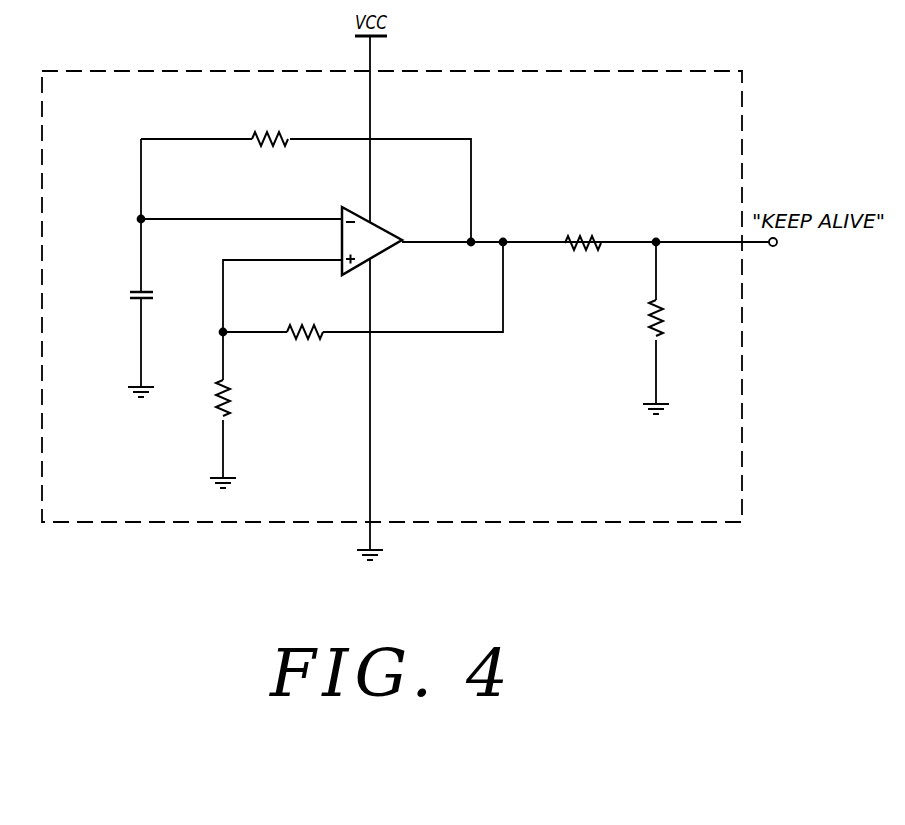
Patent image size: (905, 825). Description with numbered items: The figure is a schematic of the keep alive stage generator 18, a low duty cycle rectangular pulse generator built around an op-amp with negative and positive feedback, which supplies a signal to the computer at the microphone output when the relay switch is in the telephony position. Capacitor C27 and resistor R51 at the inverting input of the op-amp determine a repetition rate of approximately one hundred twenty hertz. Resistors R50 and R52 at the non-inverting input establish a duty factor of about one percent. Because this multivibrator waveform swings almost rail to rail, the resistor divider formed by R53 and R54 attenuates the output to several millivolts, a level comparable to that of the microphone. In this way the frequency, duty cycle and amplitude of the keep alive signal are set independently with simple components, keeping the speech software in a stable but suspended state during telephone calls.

The "keep alive" stage generator 18 is at (655, 522).
The resistor R50 is at (231, 398).
The resistor R51 is at (286, 137).
The resistor R52 is at (304, 326).
The resistor divider resistor R53 is at (580, 237).
The resistor divider resistor R54 is at (648, 320).
The capacitor C27 is at (133, 289).